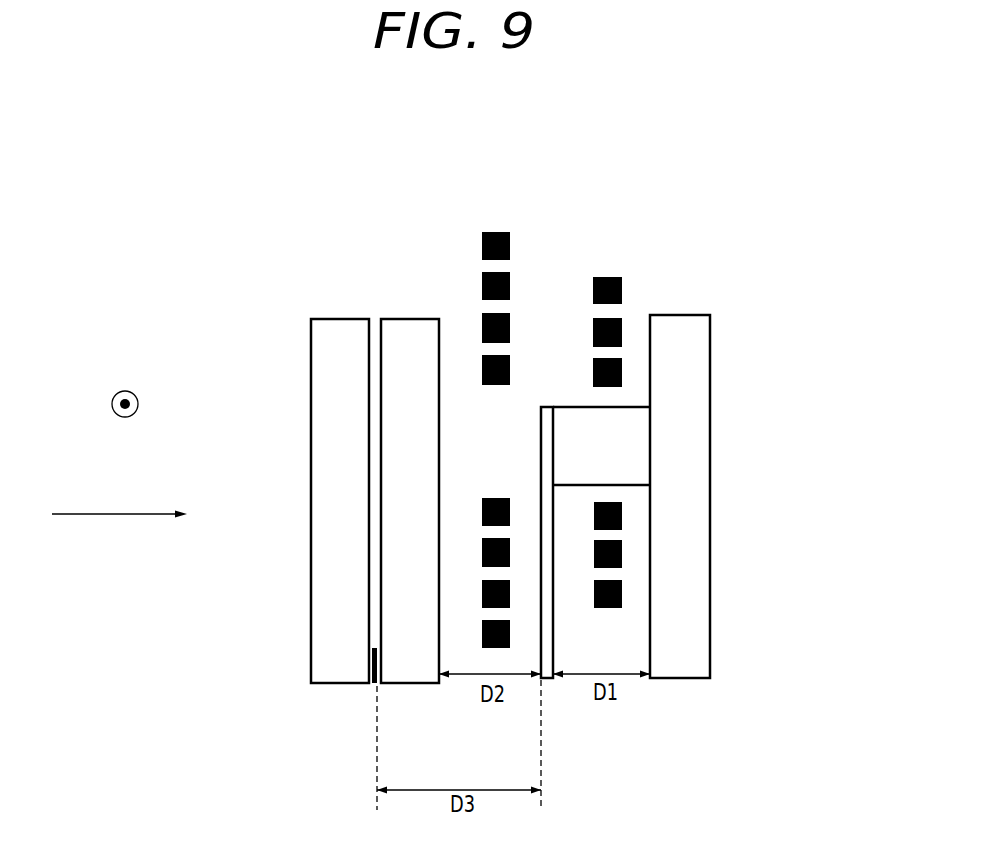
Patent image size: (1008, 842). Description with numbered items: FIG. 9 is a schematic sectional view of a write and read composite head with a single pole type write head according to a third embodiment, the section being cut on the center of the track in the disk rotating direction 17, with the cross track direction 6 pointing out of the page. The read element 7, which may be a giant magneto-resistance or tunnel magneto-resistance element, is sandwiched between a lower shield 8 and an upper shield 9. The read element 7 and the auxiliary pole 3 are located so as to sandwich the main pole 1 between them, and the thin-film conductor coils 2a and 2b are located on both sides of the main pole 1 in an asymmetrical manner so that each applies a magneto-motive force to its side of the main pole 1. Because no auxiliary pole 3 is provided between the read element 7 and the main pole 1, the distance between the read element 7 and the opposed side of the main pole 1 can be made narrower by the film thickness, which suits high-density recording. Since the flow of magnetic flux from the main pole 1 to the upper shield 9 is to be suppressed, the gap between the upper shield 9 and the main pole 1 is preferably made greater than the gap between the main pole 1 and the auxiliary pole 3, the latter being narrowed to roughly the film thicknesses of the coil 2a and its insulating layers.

The main pole 1 is at (553, 687).
The thin-film conductor coil 2a is at (613, 265).
The thin-film conductor coil 2b is at (503, 225).
The auxiliary pole 3 is at (682, 627).
The cross track direction 6 is at (131, 435).
The read element 7 is at (370, 688).
The lower shield 8 is at (333, 335).
The upper shield 9 is at (410, 338).
The disk rotating direction 17 is at (125, 545).